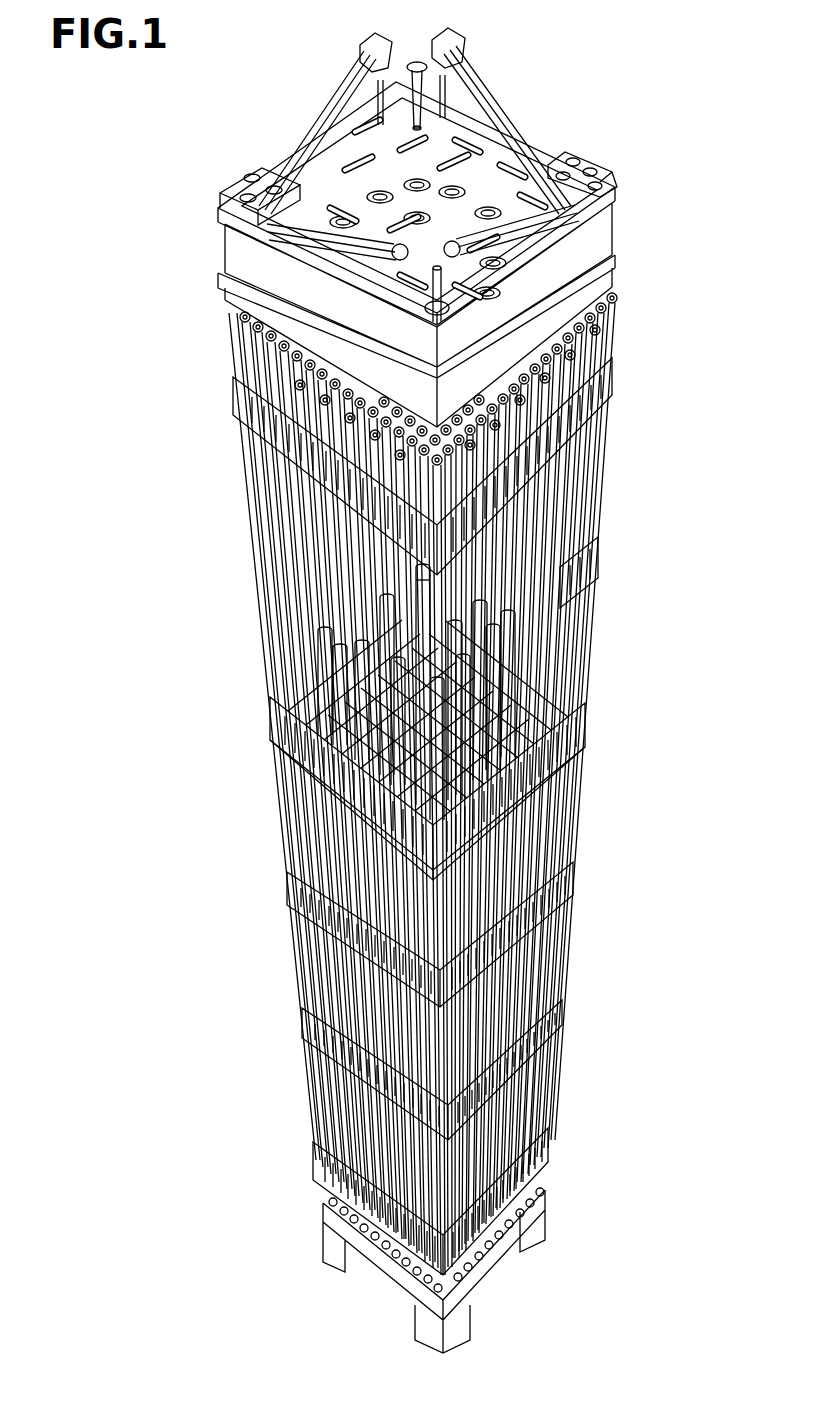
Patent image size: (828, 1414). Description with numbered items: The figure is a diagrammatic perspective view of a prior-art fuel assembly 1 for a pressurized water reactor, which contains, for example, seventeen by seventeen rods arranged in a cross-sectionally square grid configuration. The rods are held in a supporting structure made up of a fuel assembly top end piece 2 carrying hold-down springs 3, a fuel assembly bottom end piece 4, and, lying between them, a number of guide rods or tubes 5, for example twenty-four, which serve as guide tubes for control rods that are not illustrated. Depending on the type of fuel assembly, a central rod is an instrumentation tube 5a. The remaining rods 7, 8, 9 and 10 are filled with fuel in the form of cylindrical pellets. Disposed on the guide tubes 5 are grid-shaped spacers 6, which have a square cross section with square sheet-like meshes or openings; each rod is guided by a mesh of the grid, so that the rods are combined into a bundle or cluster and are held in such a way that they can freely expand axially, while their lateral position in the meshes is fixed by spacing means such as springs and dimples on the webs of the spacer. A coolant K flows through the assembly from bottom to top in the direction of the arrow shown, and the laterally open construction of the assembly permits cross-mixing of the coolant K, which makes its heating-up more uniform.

The fuel assembly 1 is at (593, 607).
The fuel assembly top end piece 2 is at (603, 248).
The hold-down springs 3 is at (513, 111).
The fuel assembly bottom end piece 4 is at (541, 1219).
The guide rods or tubes 5 is at (488, 694).
The instrumentation tube 5a is at (420, 613).
The grid-shaped spacers 6 is at (610, 367).
The fuel rod 7 is at (233, 320).
The fuel rod 8 is at (612, 335).
The fuel rod 9 is at (522, 812).
The fuel rod 10 is at (612, 289).
The coolant K is at (496, 1298).